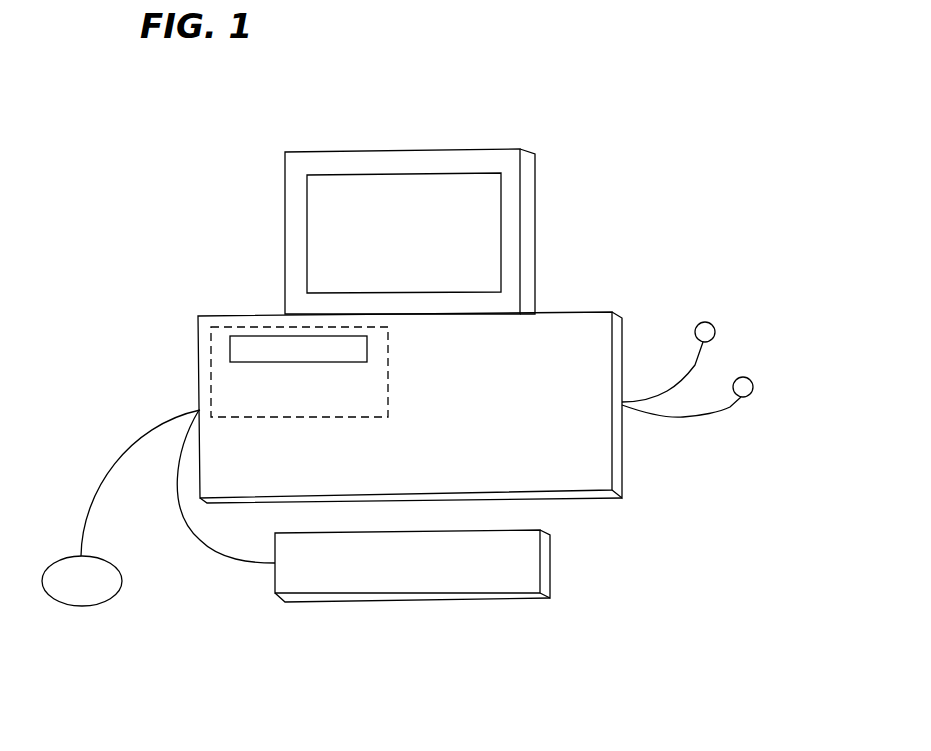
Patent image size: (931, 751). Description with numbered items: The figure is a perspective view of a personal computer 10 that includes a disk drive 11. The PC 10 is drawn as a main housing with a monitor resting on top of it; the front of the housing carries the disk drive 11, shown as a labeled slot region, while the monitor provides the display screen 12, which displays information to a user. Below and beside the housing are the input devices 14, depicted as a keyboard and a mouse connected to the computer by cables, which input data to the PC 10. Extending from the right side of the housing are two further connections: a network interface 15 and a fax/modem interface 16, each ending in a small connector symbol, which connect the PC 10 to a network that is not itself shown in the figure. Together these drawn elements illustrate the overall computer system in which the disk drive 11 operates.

The personal computer 10 is at (84, 189).
The disk drive 11 is at (371, 379).
The display screen 12 is at (402, 186).
The input devices 14 is at (275, 575).
The network interface 15 is at (692, 364).
The fax/modem interface 16 is at (720, 413).